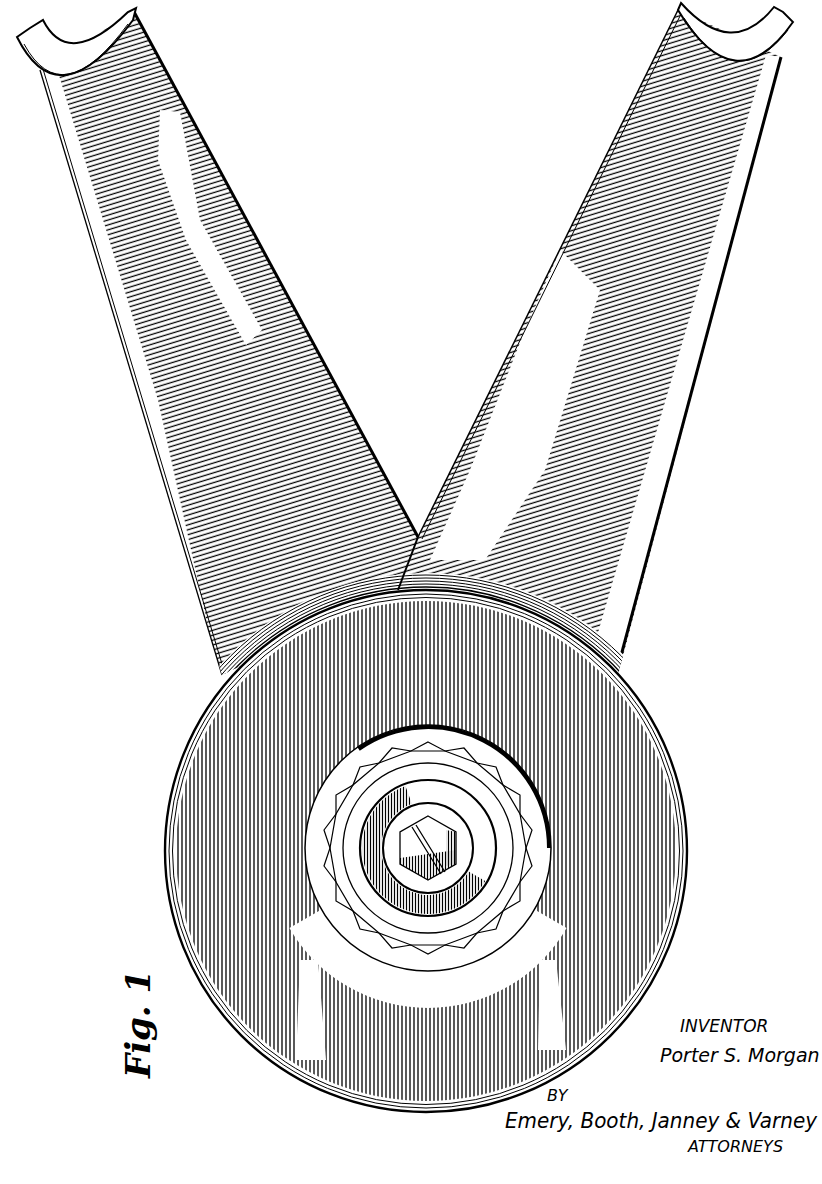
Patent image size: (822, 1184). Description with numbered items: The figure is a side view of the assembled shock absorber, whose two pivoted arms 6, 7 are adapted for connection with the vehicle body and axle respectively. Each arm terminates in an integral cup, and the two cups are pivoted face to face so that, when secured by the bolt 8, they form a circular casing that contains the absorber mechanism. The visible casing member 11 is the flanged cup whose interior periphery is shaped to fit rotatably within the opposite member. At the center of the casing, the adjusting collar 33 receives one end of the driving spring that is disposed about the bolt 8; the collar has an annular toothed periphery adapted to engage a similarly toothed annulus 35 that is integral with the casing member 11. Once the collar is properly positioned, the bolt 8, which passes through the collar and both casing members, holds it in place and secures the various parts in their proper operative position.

The arm 6 is at (243, 244).
The arm 7 is at (608, 198).
The cup-like casing member 11 is at (197, 758).
The bolt 8 is at (407, 862).
The adjusting collar 33 is at (487, 842).
The toothed annulus 35 is at (428, 954).